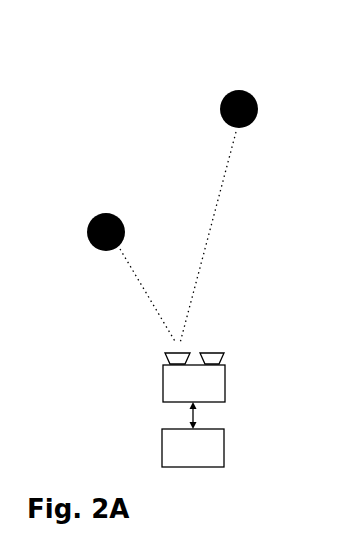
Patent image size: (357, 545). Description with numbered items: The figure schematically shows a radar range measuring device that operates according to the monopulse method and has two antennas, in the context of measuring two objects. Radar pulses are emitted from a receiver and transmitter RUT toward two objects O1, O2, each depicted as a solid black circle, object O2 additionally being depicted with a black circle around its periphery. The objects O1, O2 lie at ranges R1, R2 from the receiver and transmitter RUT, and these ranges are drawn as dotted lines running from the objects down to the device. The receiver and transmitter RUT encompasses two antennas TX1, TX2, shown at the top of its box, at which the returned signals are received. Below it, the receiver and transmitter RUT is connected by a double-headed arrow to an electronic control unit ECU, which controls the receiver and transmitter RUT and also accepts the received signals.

The object O1 is at (103, 213).
The object O2 is at (246, 93).
The range R1 is at (148, 296).
The range R2 is at (215, 237).
The antenna TX1 is at (163, 359).
The antenna TX2 is at (224, 359).
The radar under test RUT is at (194, 383).
The electronic control unit ECU is at (193, 448).